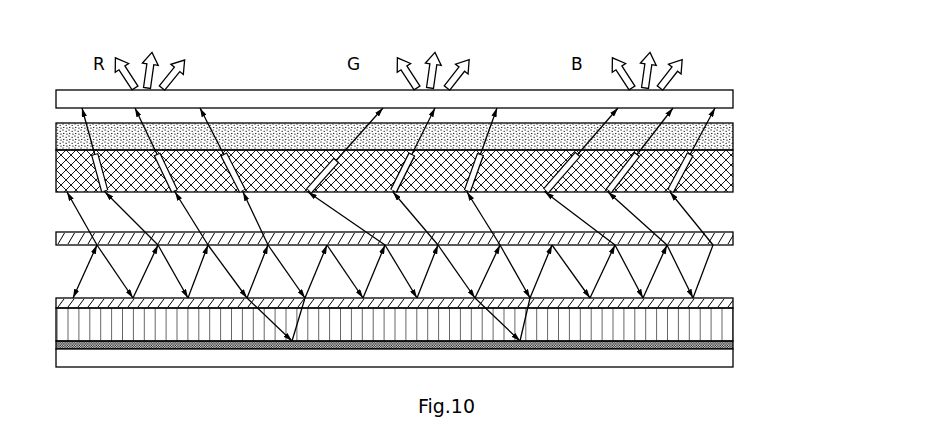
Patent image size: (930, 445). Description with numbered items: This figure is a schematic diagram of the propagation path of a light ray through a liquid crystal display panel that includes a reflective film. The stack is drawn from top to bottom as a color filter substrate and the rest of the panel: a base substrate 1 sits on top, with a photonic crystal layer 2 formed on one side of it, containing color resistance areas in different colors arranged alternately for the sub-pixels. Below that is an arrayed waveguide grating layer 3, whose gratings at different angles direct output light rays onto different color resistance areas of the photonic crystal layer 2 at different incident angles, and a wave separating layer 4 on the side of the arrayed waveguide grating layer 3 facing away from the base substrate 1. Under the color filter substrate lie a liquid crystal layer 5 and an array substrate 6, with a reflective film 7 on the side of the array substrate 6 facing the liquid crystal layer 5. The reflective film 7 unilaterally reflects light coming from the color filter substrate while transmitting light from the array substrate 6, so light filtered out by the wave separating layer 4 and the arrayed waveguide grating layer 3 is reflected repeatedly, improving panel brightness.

The base substrate 1 is at (733, 100).
The photonic crystal layer 2 is at (733, 137).
The arrayed waveguide grating layer 3 is at (733, 173).
The wave separating layer 4 is at (733, 234).
The liquid crystal layer 5 is at (733, 324).
The array substrate 6 is at (733, 362).
The reflective film 7 is at (733, 345).